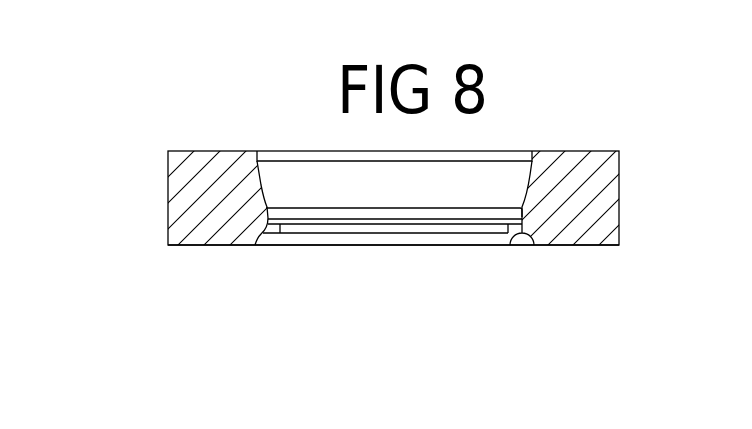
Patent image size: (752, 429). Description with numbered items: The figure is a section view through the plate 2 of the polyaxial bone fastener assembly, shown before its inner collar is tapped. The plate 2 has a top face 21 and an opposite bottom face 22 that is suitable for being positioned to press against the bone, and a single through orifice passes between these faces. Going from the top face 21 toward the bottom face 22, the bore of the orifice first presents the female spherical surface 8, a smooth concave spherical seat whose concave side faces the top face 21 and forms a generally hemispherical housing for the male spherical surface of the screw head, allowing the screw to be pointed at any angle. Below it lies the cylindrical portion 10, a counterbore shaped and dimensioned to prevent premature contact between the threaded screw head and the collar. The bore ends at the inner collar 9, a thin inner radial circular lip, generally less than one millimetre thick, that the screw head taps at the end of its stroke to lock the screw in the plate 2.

The plate 2 is at (608, 207).
The top face 21 is at (570, 151).
The female spherical surface 8 is at (258, 182).
The cylindrical portion 10 is at (267, 209).
The inner collar 9 is at (519, 226).
The bottom face 22 is at (578, 245).